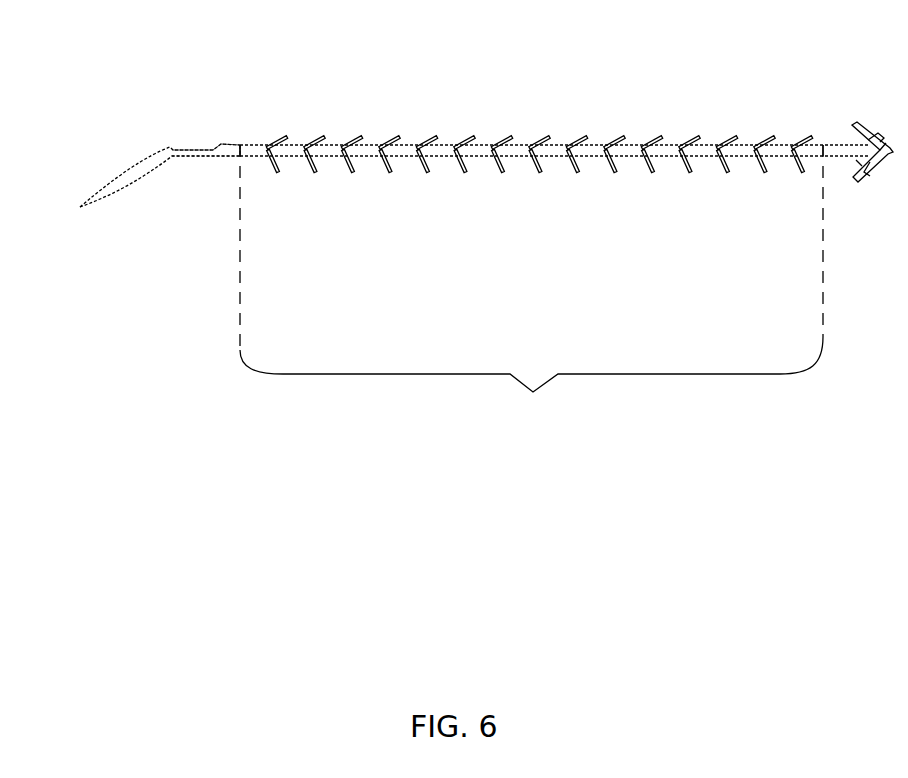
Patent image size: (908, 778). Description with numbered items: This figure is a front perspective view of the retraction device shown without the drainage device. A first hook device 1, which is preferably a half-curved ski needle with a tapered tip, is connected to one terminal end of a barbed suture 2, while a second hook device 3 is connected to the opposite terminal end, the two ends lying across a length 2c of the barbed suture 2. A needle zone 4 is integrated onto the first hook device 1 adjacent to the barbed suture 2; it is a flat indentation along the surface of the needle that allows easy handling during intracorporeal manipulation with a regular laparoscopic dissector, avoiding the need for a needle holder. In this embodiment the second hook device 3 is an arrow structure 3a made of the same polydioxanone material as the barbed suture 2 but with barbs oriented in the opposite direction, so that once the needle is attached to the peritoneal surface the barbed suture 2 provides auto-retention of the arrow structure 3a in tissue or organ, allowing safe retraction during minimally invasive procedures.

The first hook device 1 is at (130, 170).
The needle zone 4 is at (193, 145).
The barbed suture 2 is at (485, 121).
The second hook device 3 is at (816, 108).
The arrow structure 3a is at (860, 127).
The length of the barbed suture 2c is at (533, 392).